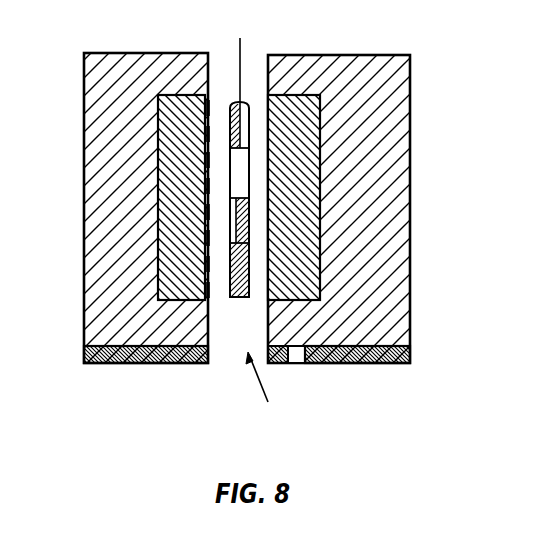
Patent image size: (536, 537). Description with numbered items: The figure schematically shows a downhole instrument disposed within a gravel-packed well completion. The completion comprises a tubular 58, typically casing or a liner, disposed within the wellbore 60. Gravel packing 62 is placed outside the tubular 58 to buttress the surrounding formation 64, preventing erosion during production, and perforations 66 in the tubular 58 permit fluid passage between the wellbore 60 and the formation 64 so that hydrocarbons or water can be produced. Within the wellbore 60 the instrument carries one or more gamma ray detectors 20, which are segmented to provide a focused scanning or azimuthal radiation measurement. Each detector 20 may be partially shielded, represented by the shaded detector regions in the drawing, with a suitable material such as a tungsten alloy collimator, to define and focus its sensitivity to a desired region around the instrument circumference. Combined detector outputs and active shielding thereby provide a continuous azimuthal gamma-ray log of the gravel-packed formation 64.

The gamma ray detector 20 is at (243, 102).
The tubular 58 is at (208, 53).
The wellbore 60 is at (269, 391).
The gravel packing 62 is at (165, 187).
The formation 64 is at (395, 122).
The perforations 66 is at (307, 228).